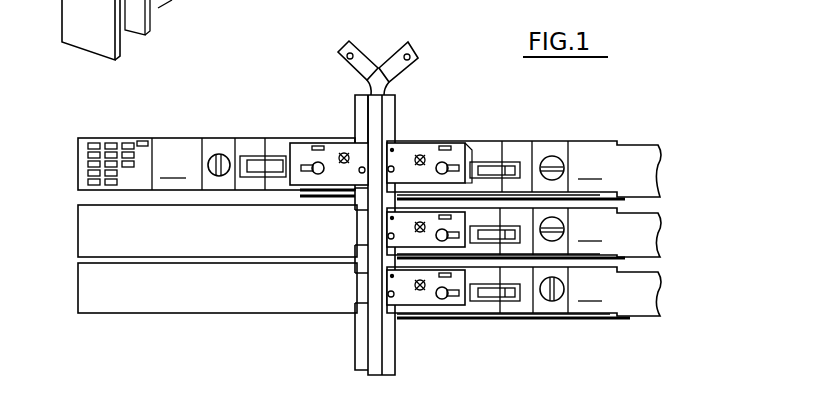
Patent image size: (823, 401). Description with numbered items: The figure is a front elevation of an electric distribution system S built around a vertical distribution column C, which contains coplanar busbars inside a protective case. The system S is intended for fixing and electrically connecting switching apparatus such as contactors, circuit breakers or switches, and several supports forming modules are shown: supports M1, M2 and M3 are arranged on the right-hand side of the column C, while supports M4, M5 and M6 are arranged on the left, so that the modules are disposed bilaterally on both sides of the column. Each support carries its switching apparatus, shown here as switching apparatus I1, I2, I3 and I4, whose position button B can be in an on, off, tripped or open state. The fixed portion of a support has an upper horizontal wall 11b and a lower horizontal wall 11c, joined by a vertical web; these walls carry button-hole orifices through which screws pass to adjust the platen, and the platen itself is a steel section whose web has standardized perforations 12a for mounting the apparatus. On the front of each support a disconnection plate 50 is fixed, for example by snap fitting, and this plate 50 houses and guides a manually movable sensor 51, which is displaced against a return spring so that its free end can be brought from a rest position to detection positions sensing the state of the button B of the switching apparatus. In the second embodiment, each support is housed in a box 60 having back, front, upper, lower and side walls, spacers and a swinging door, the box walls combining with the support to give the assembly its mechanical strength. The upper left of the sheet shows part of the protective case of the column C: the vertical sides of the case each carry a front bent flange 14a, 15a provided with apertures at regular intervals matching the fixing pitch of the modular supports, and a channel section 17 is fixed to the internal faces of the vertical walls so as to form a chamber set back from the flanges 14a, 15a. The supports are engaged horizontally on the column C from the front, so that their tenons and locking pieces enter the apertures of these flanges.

The front bent flange 15a is at (28, 10).
The channel section 17 is at (50, 30).
The front bent flange 14a is at (92, 0).
The standardized perforations 12a is at (112, 137).
The upper horizontal wall 11b is at (442, 141).
The lower horizontal wall 11c is at (422, 323).
The disconnection plate 50 is at (475, 147).
The sensor 51 is at (522, 150).
The box 60 is at (533, 324).
The button of the switching apparatus B is at (133, 66).
The distribution column C is at (402, 121).
The electric distribution system S is at (625, 103).
The support M1 is at (525, 153).
The support M2 is at (545, 231).
The support M3 is at (549, 316).
The support M4 is at (197, 149).
The support M5 is at (78, 232).
The support M6 is at (78, 288).
The switching apparatus I1 is at (590, 168).
The switching apparatus I2 is at (590, 230).
The switching apparatus I3 is at (590, 290).
The switching apparatus I4 is at (173, 167).